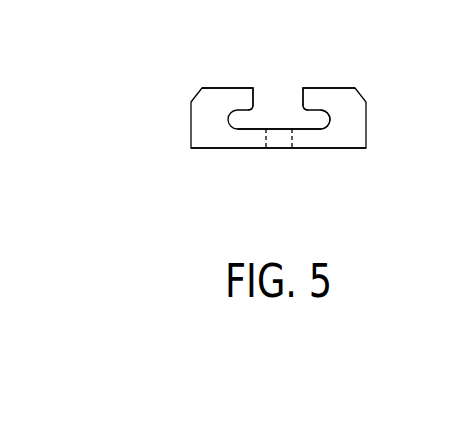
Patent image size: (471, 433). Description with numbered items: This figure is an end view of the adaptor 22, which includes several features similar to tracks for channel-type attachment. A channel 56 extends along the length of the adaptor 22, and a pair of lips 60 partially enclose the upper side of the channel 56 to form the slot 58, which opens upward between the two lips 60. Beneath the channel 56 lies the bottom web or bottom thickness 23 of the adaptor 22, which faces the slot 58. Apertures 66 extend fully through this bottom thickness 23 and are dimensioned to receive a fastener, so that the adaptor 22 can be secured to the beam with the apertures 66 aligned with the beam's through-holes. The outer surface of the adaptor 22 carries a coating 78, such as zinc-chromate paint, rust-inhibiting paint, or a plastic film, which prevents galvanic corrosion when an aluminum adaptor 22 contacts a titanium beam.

The adaptor 22 is at (190, 142).
The bottom thickness 23 is at (238, 138).
The channel 56 is at (310, 118).
The slot 58 is at (282, 105).
The pair of lips 60 is at (230, 87).
The apertures 66 is at (278, 137).
The coating 78 is at (348, 148).